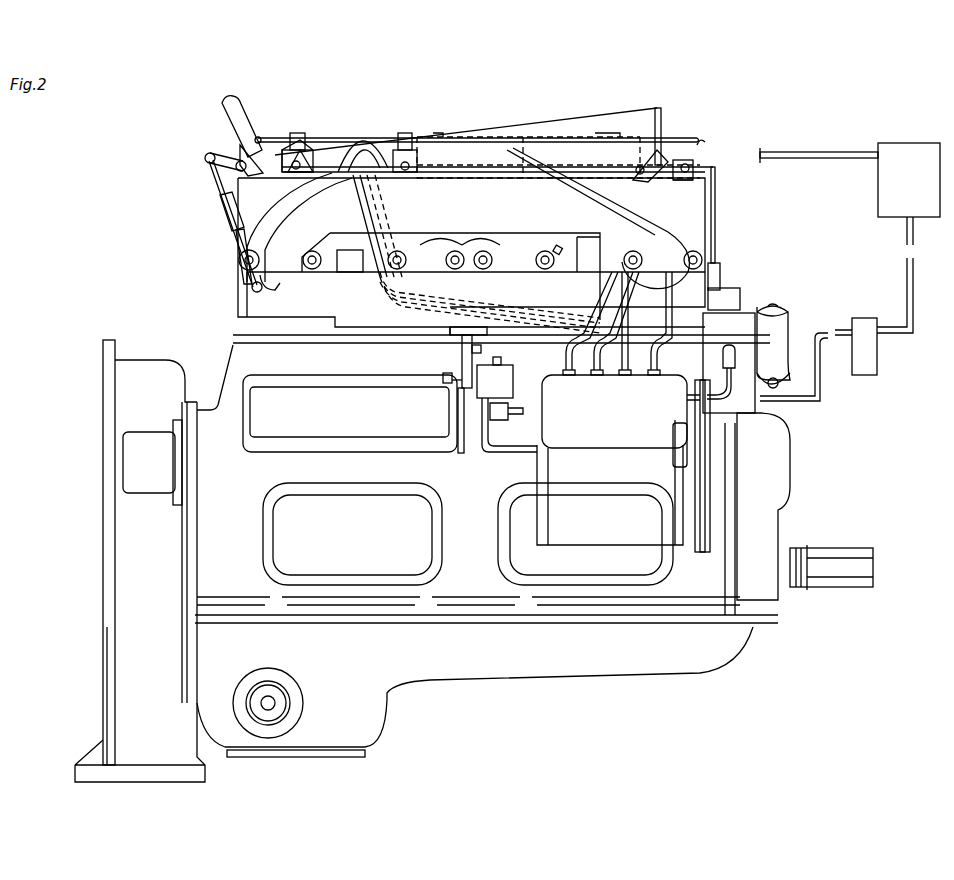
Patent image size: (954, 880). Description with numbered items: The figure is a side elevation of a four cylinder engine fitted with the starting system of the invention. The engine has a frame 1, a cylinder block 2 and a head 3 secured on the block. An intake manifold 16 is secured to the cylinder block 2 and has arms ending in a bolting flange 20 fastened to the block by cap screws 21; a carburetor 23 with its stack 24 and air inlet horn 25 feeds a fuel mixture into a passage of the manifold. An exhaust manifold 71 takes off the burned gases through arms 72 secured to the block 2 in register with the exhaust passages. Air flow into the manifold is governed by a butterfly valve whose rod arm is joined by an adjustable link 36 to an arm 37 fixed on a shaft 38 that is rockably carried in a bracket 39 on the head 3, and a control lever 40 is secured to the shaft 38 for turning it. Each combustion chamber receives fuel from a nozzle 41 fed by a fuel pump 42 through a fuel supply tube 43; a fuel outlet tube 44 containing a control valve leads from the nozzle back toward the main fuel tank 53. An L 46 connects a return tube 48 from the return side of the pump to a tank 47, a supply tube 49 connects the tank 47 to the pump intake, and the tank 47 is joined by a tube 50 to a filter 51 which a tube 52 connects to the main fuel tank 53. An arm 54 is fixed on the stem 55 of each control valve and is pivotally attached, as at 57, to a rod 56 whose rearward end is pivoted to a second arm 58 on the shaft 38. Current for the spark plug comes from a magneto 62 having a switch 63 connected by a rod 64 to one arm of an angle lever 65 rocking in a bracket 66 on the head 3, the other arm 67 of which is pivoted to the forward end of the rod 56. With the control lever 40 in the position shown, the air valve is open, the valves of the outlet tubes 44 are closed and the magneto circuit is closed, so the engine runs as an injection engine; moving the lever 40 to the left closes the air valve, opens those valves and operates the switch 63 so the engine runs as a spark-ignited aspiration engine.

The frame 1 is at (228, 358).
The cylinder block 2 is at (240, 312).
The head 3 is at (235, 205).
The intake manifold 16 is at (389, 334).
The bolting flange 20 is at (588, 235).
The cap screws 21 is at (557, 250).
The carburetor 23 is at (480, 385).
The stack 24 is at (460, 352).
The air inlet horn 25 is at (445, 384).
The adjustable link 36 is at (243, 238).
The arm 37 is at (218, 153).
The shaft 38 is at (208, 162).
The bracket 39 is at (233, 180).
The control lever 40 is at (228, 112).
The nozzle 41 is at (418, 168).
The fuel pump 42 is at (614, 457).
The fuel supply tube 43 is at (582, 357).
The fuel outlet tube 44 is at (336, 176).
The L 46 is at (722, 355).
The tank 47 is at (765, 410).
The return tube 48 is at (740, 412).
The supply tube 49 is at (690, 395).
The tube 50 is at (820, 400).
The filter 51 is at (878, 355).
The tube 52 is at (905, 272).
The main fuel tank 53 is at (878, 190).
The arm 54 is at (305, 158).
The stem 55 is at (300, 168).
The rod 56 is at (370, 140).
The pivot connection 57 is at (407, 158).
The second arm 58 is at (258, 136).
The magneto 62 is at (740, 295).
The switch 63 is at (720, 275).
The rod 64 is at (716, 234).
The angle lever 65 is at (716, 170).
The bracket 66 is at (684, 175).
The other arm 67 is at (693, 160).
The exhaust manifold 71 is at (500, 143).
The arms 72 is at (440, 240).